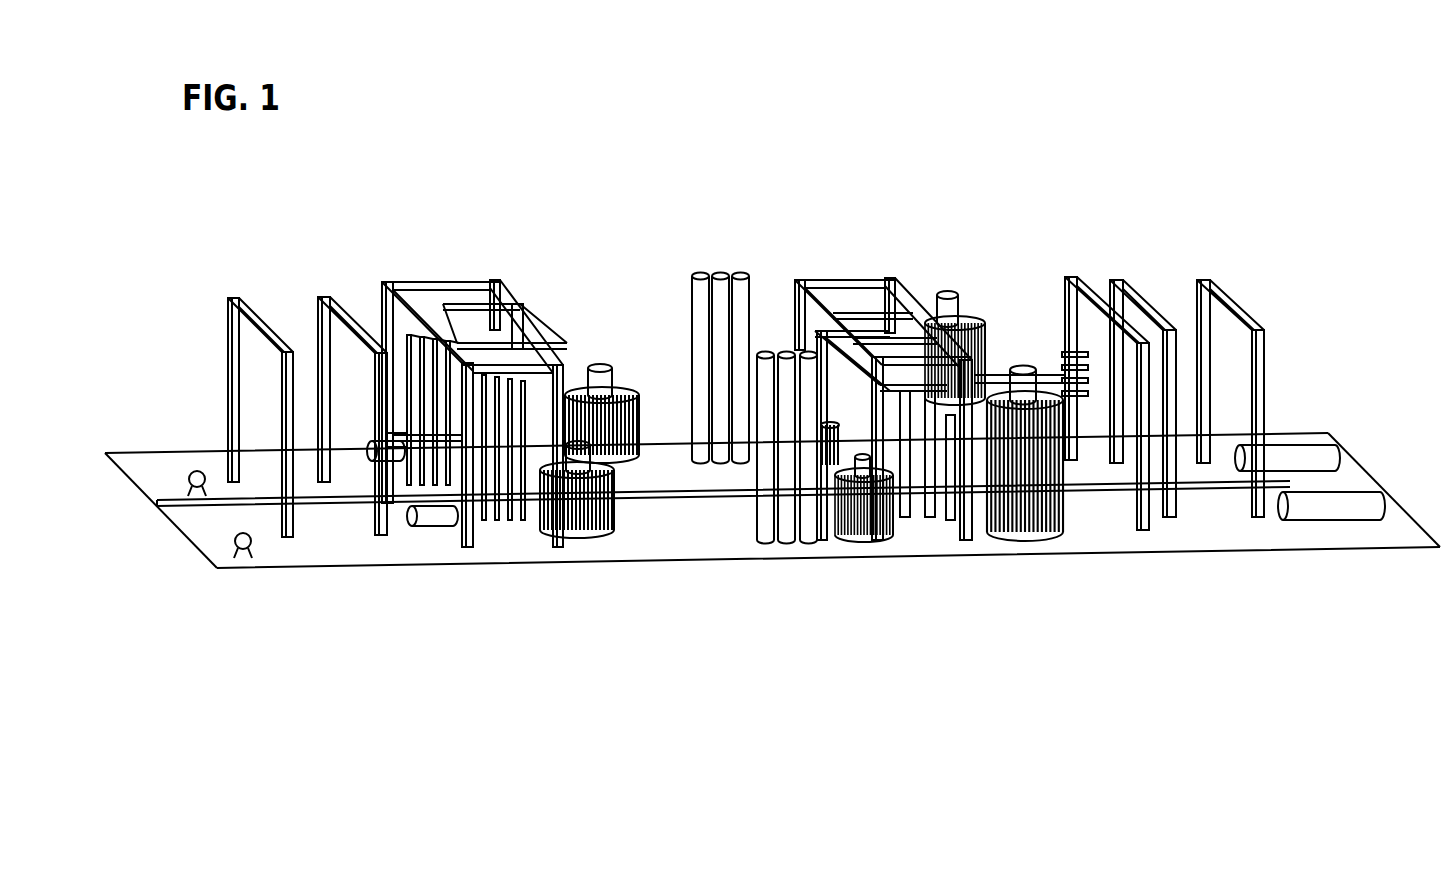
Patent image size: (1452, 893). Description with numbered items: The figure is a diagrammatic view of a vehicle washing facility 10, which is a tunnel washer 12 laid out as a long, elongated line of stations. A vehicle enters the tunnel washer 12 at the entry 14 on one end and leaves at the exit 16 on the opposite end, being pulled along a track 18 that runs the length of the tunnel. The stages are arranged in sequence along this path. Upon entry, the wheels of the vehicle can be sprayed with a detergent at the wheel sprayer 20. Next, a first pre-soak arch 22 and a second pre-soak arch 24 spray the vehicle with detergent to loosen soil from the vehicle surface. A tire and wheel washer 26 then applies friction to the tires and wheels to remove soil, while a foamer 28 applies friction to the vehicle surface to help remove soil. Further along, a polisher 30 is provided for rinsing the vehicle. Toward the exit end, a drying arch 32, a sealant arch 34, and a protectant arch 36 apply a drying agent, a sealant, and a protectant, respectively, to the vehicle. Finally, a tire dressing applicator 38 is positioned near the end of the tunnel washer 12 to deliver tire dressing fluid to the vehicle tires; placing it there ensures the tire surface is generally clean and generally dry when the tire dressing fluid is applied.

The vehicle washing facility 10 is at (1042, 148).
The tunnel washer 12 is at (637, 170).
The entry 14 is at (160, 310).
The exit 16 is at (1326, 266).
The track 18 is at (160, 500).
The wheel sprayer 20 is at (237, 536).
The first pre-soak arch 22 is at (231, 298).
The second pre-soak arch 24 is at (324, 297).
The tire and wheel washer 26 is at (446, 518).
The foamer 28 is at (488, 248).
The polisher 30 is at (850, 230).
The drying arch 32 is at (1071, 277).
The sealant arch 34 is at (1123, 281).
The protectant arch 36 is at (1203, 280).
The tire dressing applicator 38 is at (1374, 497).